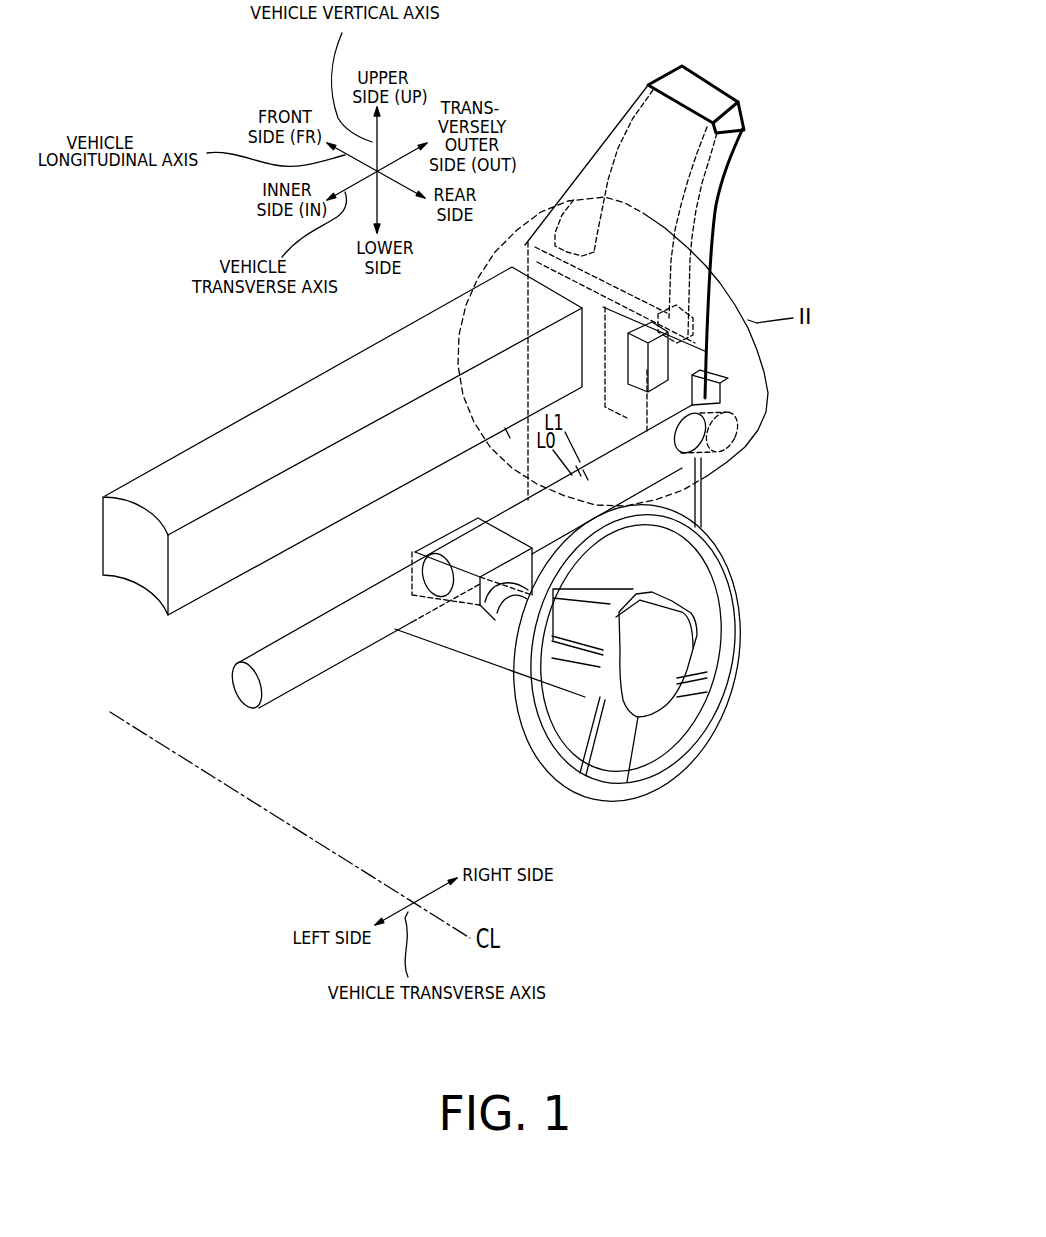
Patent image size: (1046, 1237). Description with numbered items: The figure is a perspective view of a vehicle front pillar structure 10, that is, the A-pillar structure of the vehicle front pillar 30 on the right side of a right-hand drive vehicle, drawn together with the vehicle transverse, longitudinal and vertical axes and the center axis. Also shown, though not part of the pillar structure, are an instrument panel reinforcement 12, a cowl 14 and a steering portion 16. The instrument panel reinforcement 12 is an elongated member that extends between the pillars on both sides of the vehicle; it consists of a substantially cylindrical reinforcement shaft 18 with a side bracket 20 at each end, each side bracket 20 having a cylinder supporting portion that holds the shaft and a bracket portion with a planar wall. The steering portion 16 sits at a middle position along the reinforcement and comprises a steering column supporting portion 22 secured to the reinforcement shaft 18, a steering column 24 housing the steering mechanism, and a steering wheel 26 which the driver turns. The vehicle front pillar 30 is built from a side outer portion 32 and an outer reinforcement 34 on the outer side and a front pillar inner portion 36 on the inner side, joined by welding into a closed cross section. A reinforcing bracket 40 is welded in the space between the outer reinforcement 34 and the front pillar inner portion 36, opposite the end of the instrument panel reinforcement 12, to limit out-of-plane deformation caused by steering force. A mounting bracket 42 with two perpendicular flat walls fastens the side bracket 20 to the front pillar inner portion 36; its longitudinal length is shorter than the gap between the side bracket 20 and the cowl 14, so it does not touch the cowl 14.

The vehicle front pillar structure 10 is at (543, 135).
The instrument panel reinforcement 12 is at (670, 597).
The cowl 14 is at (190, 590).
The steering portion 16 is at (459, 582).
The reinforcement shaft 18 is at (640, 496).
The side bracket 20 is at (722, 405).
The steering column supporting portion 22 is at (467, 605).
The steering column 24 is at (500, 643).
The steering wheel 26 is at (540, 712).
The vehicle front pillar 30 is at (673, 232).
The side outer portion 32 is at (734, 99).
The outer reinforcement 34 is at (717, 92).
The front pillar inner portion 36 is at (586, 363).
The reinforcing bracket 40 is at (693, 316).
The mounting bracket 42 is at (626, 396).